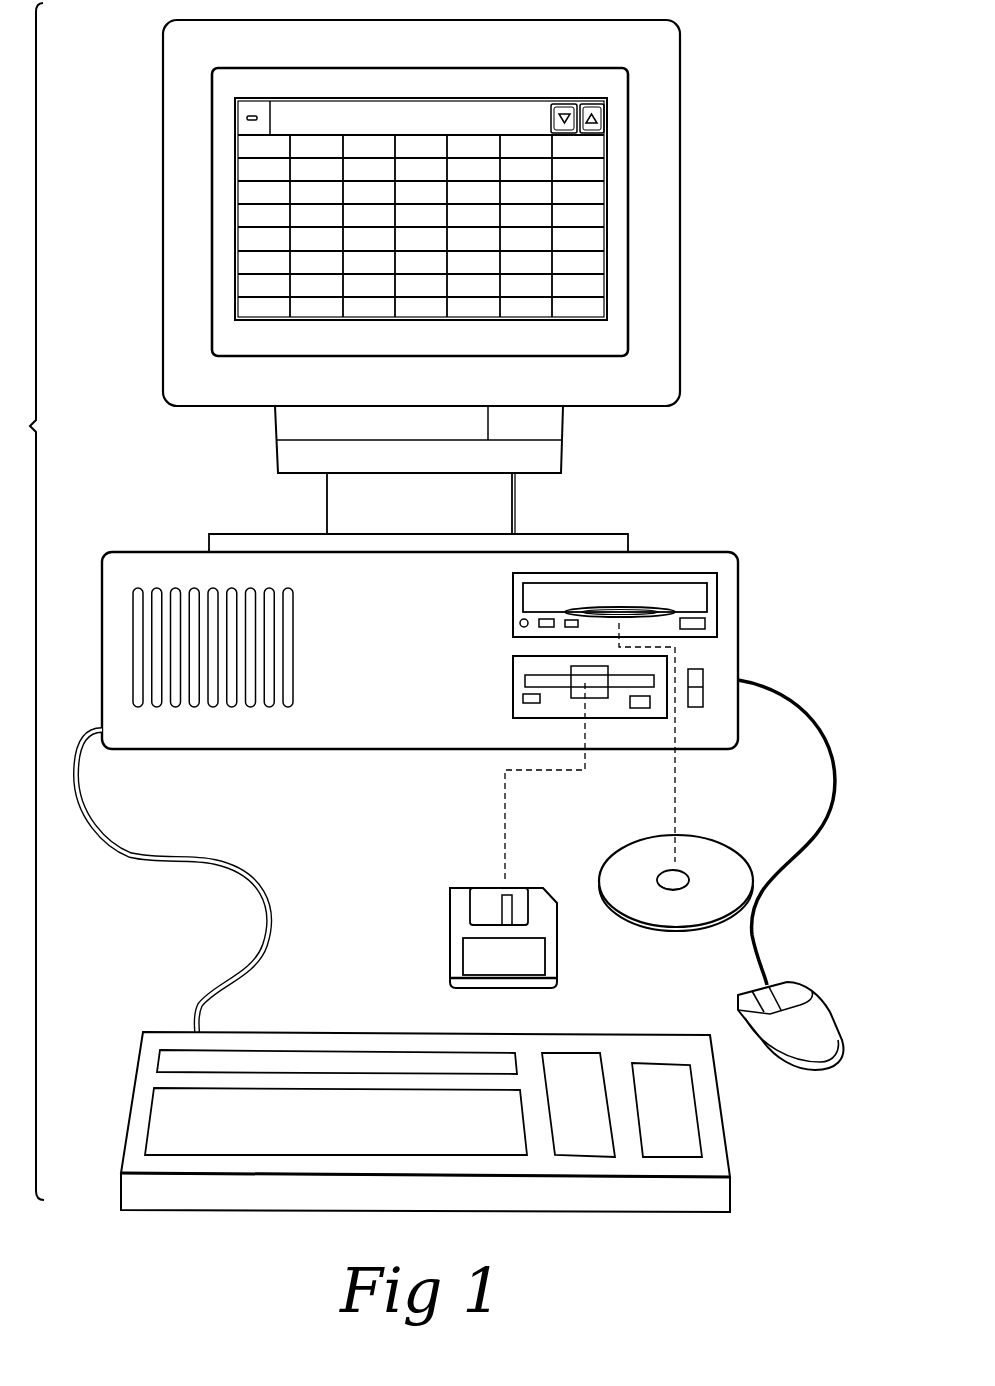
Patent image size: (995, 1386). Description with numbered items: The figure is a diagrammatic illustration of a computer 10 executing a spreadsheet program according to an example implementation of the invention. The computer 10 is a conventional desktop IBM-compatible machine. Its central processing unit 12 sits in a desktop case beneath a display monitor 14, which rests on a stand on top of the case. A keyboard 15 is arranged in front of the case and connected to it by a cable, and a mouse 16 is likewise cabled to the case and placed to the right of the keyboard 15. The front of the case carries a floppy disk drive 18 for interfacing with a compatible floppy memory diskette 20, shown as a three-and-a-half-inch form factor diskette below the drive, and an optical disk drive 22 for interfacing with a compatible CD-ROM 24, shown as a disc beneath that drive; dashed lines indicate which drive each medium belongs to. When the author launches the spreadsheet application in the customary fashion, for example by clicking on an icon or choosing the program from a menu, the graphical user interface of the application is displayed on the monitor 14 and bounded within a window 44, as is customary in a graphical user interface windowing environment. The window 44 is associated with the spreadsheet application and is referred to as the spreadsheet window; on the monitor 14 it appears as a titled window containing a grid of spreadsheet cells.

The computer 10 is at (764, 106).
The central processing unit 12 is at (740, 624).
The display monitor 14 is at (658, 200).
The keyboard 15 is at (728, 1137).
The mouse 16 is at (760, 1028).
The floppy disk drive 18 is at (520, 666).
The floppy memory diskette 20 is at (462, 922).
The optical disk drive 22 is at (530, 592).
The CD-ROM 24 is at (607, 880).
The window 44 is at (590, 270).